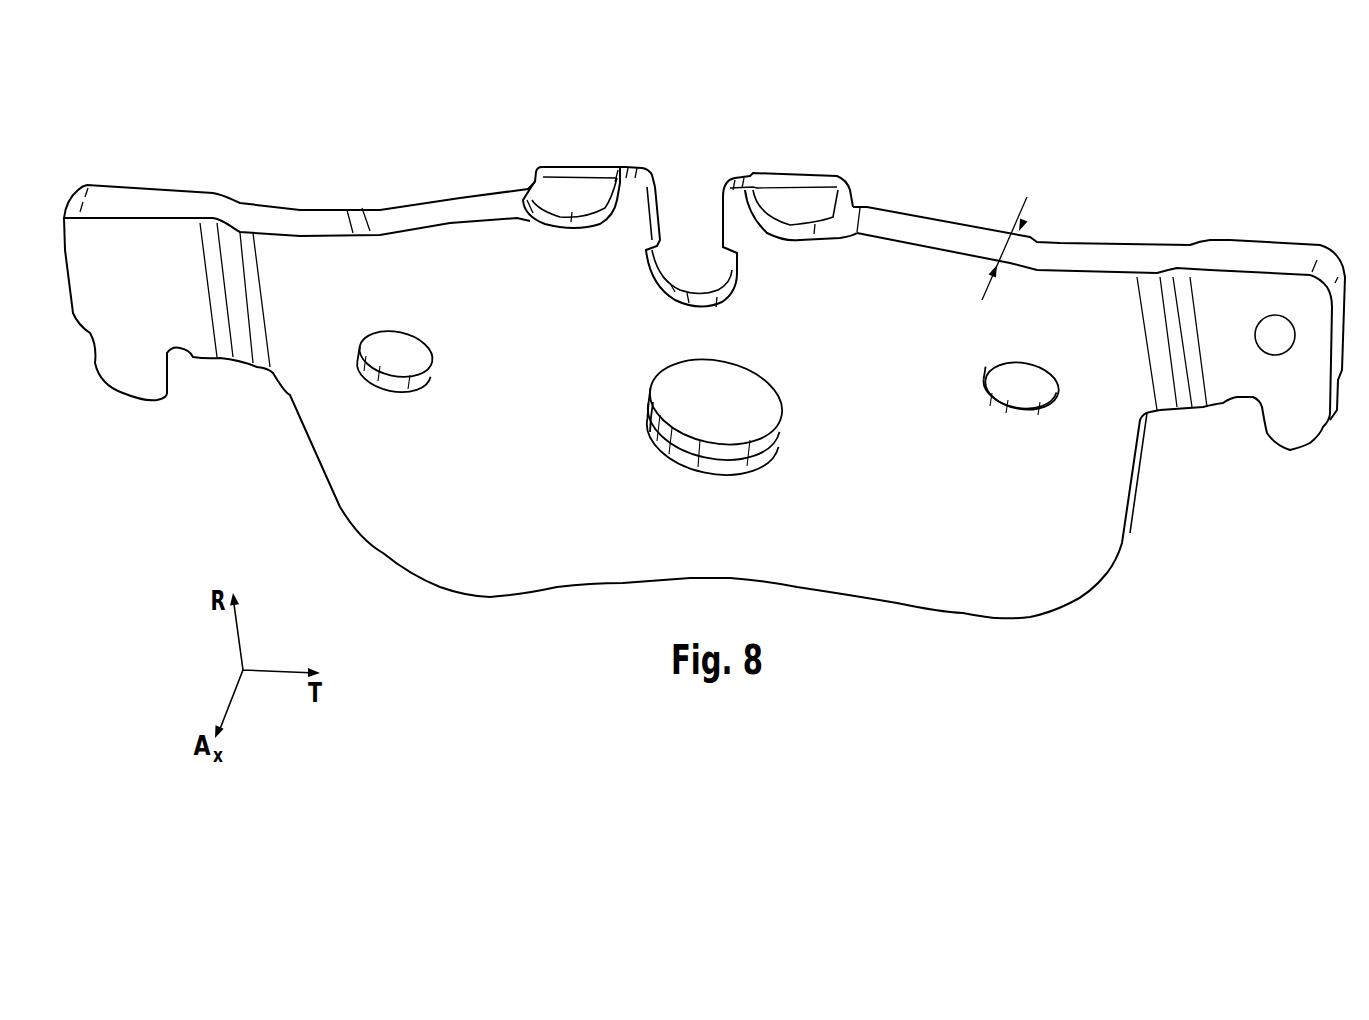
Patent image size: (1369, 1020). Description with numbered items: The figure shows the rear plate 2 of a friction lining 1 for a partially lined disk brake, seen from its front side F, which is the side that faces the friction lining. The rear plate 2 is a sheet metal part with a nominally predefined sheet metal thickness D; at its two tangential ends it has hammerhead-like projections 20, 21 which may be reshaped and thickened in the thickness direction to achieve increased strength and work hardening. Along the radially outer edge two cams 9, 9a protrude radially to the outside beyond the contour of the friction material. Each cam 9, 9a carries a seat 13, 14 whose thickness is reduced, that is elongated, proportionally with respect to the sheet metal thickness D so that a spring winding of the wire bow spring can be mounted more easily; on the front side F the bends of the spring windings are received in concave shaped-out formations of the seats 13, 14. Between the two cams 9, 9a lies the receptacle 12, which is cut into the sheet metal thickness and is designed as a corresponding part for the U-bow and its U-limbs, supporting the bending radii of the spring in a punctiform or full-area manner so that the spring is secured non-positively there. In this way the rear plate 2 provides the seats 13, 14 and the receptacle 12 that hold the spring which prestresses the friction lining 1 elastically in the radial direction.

The friction lining 1 is at (266, 184).
The rear plate 2 is at (313, 220).
The cam 9 is at (572, 163).
The cam 9a is at (787, 173).
The receptacle 12 is at (672, 249).
The seat 13 is at (812, 200).
The seat 14 is at (588, 190).
The projection 20 is at (1167, 395).
The projection 21 is at (243, 348).
The sheet metal thickness D is at (1002, 247).
The front side F is at (1275, 335).